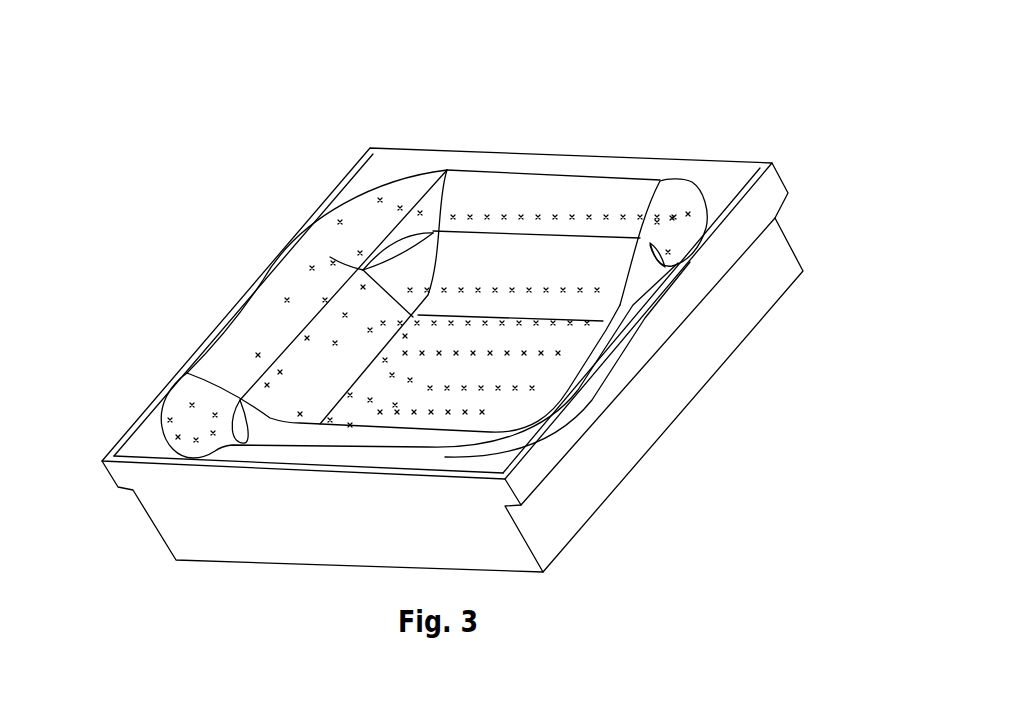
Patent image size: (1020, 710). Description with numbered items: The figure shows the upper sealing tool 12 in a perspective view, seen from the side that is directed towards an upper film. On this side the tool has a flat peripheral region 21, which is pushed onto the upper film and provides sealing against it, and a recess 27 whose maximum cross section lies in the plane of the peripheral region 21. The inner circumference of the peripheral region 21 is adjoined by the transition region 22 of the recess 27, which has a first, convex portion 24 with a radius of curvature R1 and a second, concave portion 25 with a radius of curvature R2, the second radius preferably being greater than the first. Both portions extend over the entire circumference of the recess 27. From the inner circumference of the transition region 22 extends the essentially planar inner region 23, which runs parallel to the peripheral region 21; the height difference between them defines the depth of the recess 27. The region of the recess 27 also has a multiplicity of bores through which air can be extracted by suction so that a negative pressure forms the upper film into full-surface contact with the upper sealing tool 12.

The upper sealing tool 12 is at (700, 435).
The peripheral region 21 is at (738, 187).
The transition region 22 is at (316, 341).
The inner region 23 is at (485, 368).
The first, convex portion 24 is at (291, 312).
The second, concave portion 25 is at (571, 272).
The recess 27 is at (408, 368).